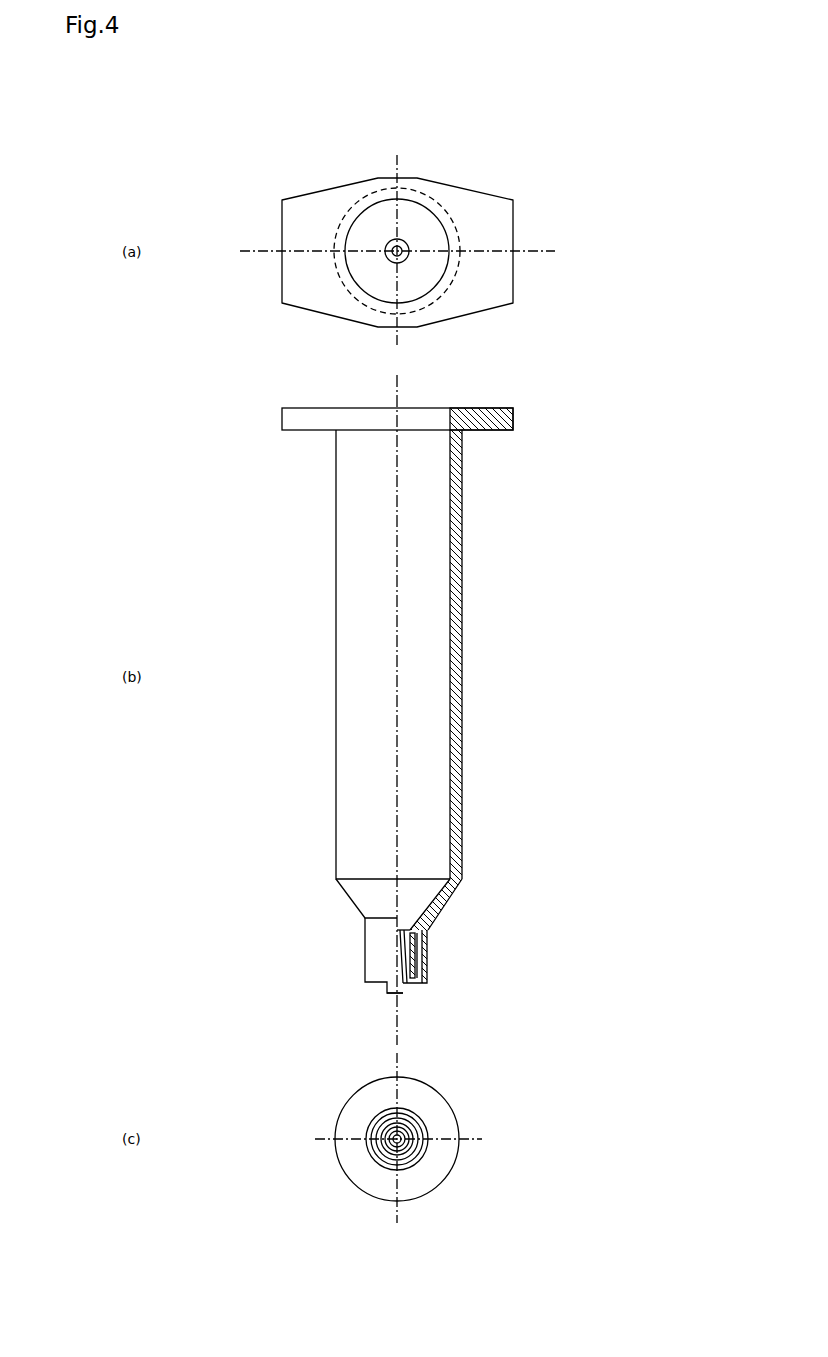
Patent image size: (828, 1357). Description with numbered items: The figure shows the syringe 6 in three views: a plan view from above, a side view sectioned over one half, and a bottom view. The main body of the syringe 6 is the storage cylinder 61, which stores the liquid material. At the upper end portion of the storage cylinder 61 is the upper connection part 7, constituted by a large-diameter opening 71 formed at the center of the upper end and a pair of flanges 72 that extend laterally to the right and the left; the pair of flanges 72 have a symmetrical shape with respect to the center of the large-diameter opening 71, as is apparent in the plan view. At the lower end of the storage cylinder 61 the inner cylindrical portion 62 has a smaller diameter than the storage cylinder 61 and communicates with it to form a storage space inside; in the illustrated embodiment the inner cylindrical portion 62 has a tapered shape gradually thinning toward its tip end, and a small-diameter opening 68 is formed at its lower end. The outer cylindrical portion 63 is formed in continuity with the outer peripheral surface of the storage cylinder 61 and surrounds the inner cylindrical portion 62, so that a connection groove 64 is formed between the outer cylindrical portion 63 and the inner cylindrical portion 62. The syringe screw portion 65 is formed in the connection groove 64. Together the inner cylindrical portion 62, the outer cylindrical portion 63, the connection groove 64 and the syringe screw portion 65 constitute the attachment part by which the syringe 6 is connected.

The syringe 6 is at (503, 739).
The storage cylinder 61 is at (458, 647).
The inner cylindrical portion 62 is at (410, 984).
The outer cylindrical portion 63 is at (430, 970).
The connection groove 64 is at (428, 932).
The syringe screw portion 65 is at (428, 952).
The small-diameter opening 68 is at (412, 1000).
The upper connection part 7 is at (525, 408).
The large-diameter opening 71 is at (415, 215).
The flanges 72 is at (495, 227).